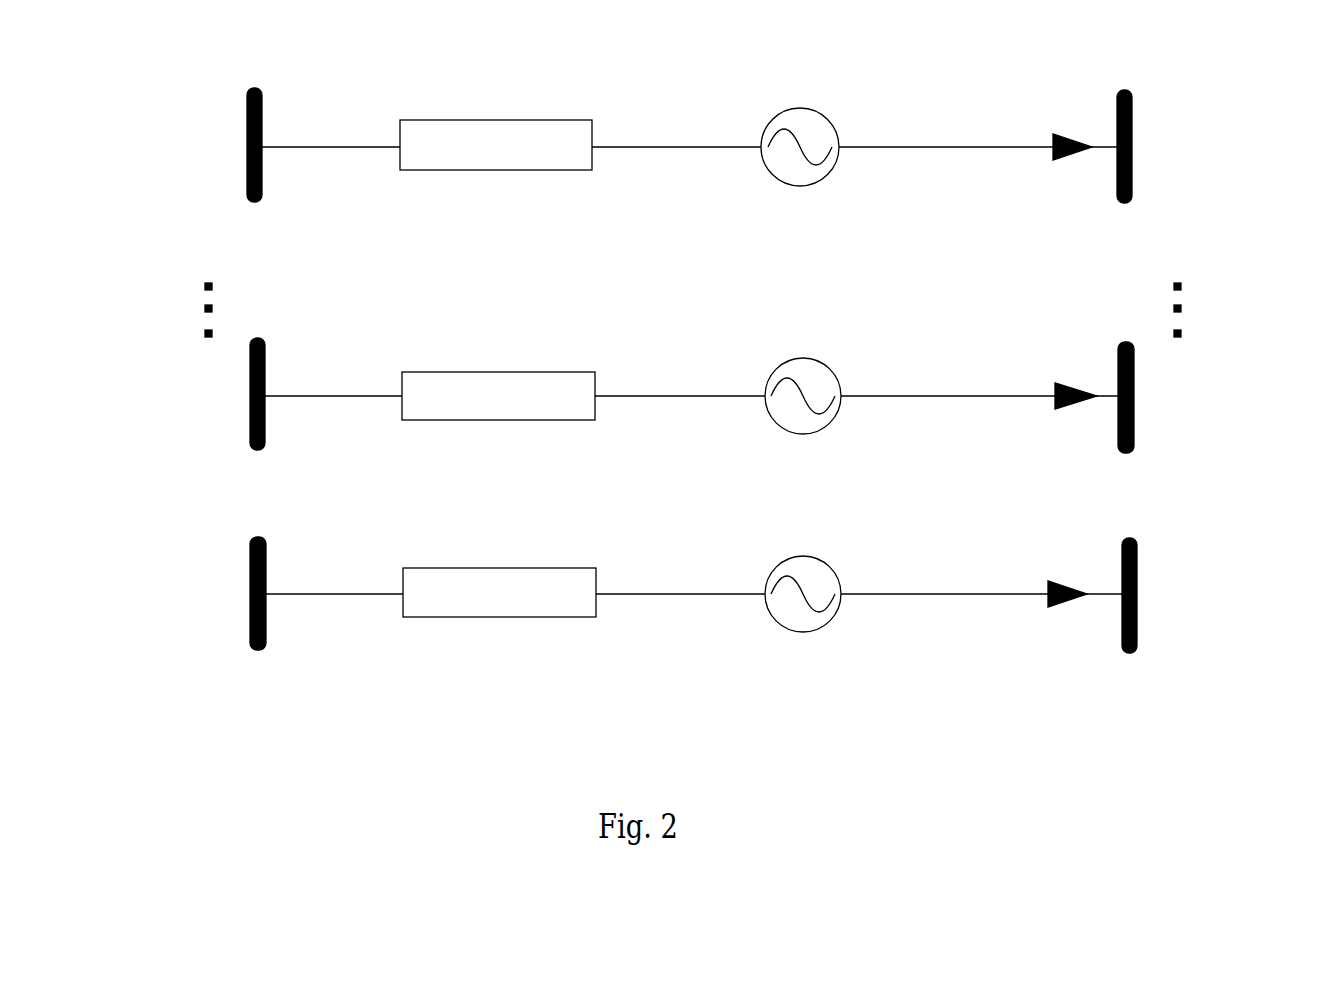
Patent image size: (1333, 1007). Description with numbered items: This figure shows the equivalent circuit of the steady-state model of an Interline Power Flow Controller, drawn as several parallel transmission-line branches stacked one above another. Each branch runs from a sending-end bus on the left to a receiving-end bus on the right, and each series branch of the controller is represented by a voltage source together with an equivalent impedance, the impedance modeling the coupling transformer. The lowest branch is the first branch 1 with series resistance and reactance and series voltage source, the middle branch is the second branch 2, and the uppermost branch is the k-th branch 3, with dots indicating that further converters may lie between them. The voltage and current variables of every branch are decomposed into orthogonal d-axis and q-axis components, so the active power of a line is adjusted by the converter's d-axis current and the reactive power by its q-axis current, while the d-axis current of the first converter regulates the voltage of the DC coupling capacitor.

The transmission line 1 (series impedance Z_ser1 and series voltage source V_ser1) 1 is at (756, 610).
The transmission line 2 (series impedance Z_ser2 and series voltage source V_ser2) 2 is at (698, 410).
The transmission line k (series impedance Z_serk and series voltage source V_serk) 3 is at (692, 161).